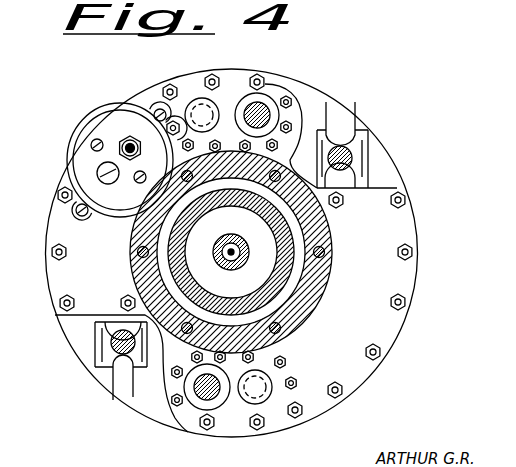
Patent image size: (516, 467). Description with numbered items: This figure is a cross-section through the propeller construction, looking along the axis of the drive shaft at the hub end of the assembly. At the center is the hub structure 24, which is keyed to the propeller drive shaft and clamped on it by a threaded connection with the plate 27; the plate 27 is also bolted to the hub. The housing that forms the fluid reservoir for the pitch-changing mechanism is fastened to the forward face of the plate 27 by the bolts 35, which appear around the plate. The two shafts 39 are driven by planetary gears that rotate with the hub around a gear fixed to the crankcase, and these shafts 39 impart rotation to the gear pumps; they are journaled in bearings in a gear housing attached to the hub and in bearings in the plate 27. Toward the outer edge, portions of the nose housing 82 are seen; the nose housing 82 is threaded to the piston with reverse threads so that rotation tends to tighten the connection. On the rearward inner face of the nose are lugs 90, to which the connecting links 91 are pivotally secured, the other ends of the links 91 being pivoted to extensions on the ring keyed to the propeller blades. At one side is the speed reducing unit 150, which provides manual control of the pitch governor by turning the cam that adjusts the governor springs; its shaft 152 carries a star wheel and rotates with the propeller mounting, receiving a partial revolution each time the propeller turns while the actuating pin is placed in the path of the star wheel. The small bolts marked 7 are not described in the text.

The bolt 7 is at (173, 120).
The hub structure 24 is at (328, 262).
The plate 27 is at (412, 222).
The bolts 35 is at (413, 252).
The shafts 39 is at (262, 105).
The nose housing 82 is at (398, 158).
The lugs 90 is at (341, 128).
The connecting links 91 is at (342, 152).
The speed reducing unit 150 is at (106, 132).
The shaft 152 is at (130, 139).